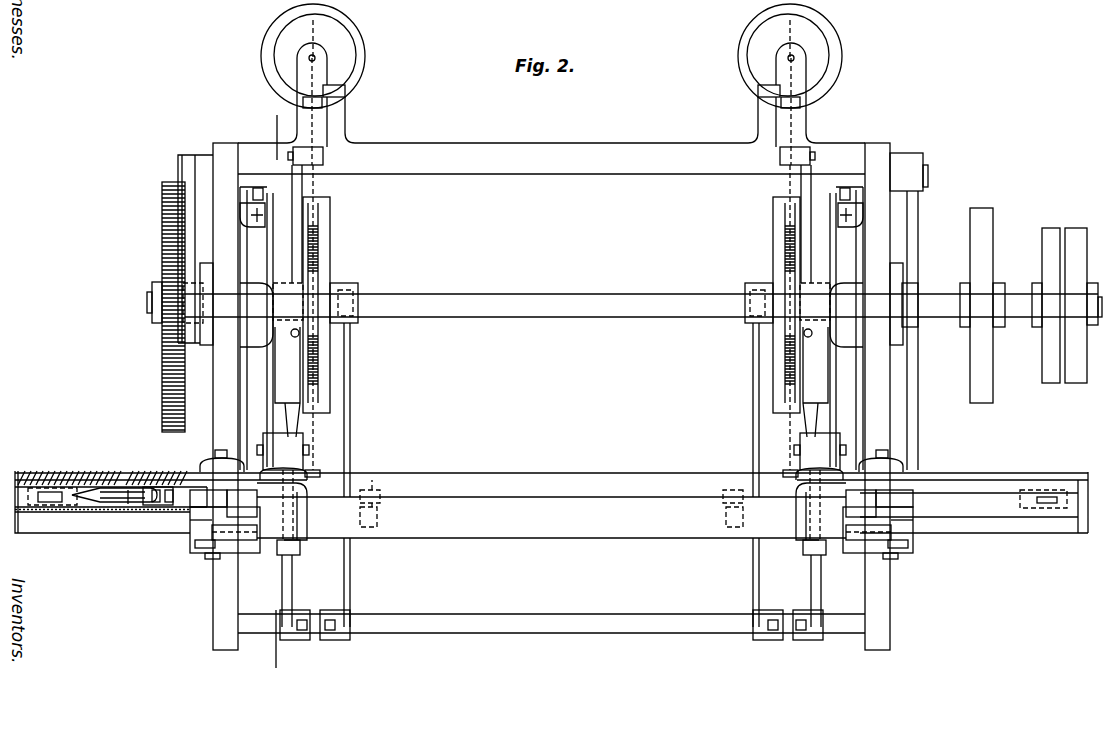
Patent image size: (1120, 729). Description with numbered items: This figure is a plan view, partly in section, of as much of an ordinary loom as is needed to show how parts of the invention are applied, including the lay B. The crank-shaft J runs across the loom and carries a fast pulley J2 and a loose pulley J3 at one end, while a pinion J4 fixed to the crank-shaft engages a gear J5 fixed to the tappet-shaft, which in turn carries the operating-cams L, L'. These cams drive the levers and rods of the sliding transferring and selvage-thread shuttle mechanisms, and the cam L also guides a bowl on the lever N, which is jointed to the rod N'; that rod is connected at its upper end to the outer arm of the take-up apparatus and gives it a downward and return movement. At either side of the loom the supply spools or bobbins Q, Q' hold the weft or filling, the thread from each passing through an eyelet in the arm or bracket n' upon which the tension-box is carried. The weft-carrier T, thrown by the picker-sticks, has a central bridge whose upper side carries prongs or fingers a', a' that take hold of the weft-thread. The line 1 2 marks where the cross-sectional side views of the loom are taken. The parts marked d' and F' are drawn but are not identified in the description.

The lay B is at (551, 517).
The crank-shaft J is at (557, 303).
The fast pulley J2 is at (1014, 305).
The loose pulley J3 is at (1082, 305).
The pinion J4 is at (162, 330).
The gear J5 is at (162, 392).
The supply spool or bobbin Q is at (313, 84).
The supply spool or bobbin Q' is at (790, 84).
The arm or bracket n' is at (357, 120).
The section line 1 is at (272, 137).
The section line 2 is at (269, 639).
The operating-cam L is at (327, 305).
The operating-cam L' is at (771, 305).
The lever for actuating the take-up apparatus N is at (293, 555).
The rod for actuating the take-up apparatus N' is at (811, 555).
The weft-carrier T is at (115, 485).
The prongs or fingers a' is at (158, 473).
The tool holder pin d' is at (140, 523).
The table casing F' is at (111, 514).